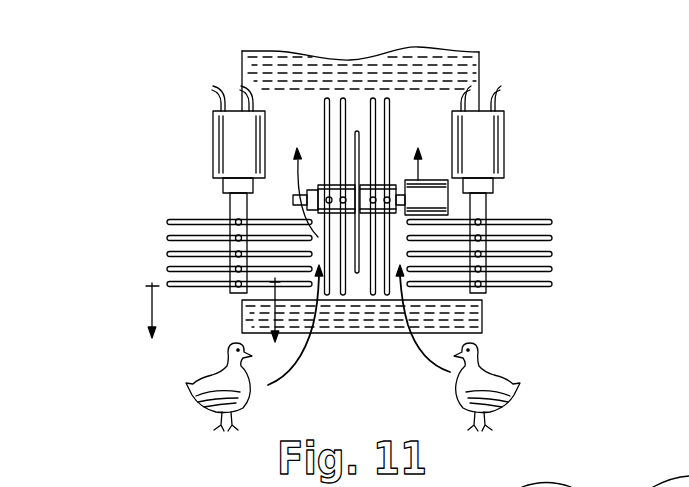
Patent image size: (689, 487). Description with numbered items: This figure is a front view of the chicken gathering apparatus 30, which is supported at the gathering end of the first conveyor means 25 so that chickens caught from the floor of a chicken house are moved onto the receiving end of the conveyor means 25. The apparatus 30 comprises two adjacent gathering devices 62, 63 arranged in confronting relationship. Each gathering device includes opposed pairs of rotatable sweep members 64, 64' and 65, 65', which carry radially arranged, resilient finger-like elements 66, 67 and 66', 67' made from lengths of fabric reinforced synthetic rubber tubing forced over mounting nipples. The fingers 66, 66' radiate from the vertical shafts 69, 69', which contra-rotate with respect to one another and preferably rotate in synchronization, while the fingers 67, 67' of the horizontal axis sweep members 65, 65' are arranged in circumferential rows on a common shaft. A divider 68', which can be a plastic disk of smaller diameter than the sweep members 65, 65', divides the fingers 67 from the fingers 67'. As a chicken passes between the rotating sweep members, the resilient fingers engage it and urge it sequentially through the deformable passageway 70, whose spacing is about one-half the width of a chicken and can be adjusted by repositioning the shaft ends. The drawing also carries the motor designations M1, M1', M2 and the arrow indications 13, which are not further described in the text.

The chicken gathering apparatus 30 is at (104, 107).
The first conveyor means 25 is at (224, 54).
The left drive motor M1 is at (218, 132).
The right drive motor M1' is at (500, 132).
The pinion drive motor M2 is at (449, 200).
The gathering device 62 is at (563, 161).
The gathering device 63 is at (156, 174).
The rotatable sweep member 64 is at (197, 228).
The rotatable sweep member 64' is at (517, 267).
The rotatable sweep member 65 is at (403, 156).
The rotatable sweep member 65' is at (314, 153).
The resilient finger-like elements 66 is at (208, 253).
The resilient finger-like elements 66' is at (512, 253).
The resilient finger-like elements 67 is at (308, 157).
The resilient finger-like elements 67' is at (414, 157).
The divider 68' is at (361, 146).
The vertical shaft 69 is at (211, 229).
The vertical shaft 69' is at (519, 262).
The deformable passageway 70 is at (428, 364).
The direction arrows 13 is at (215, 324).